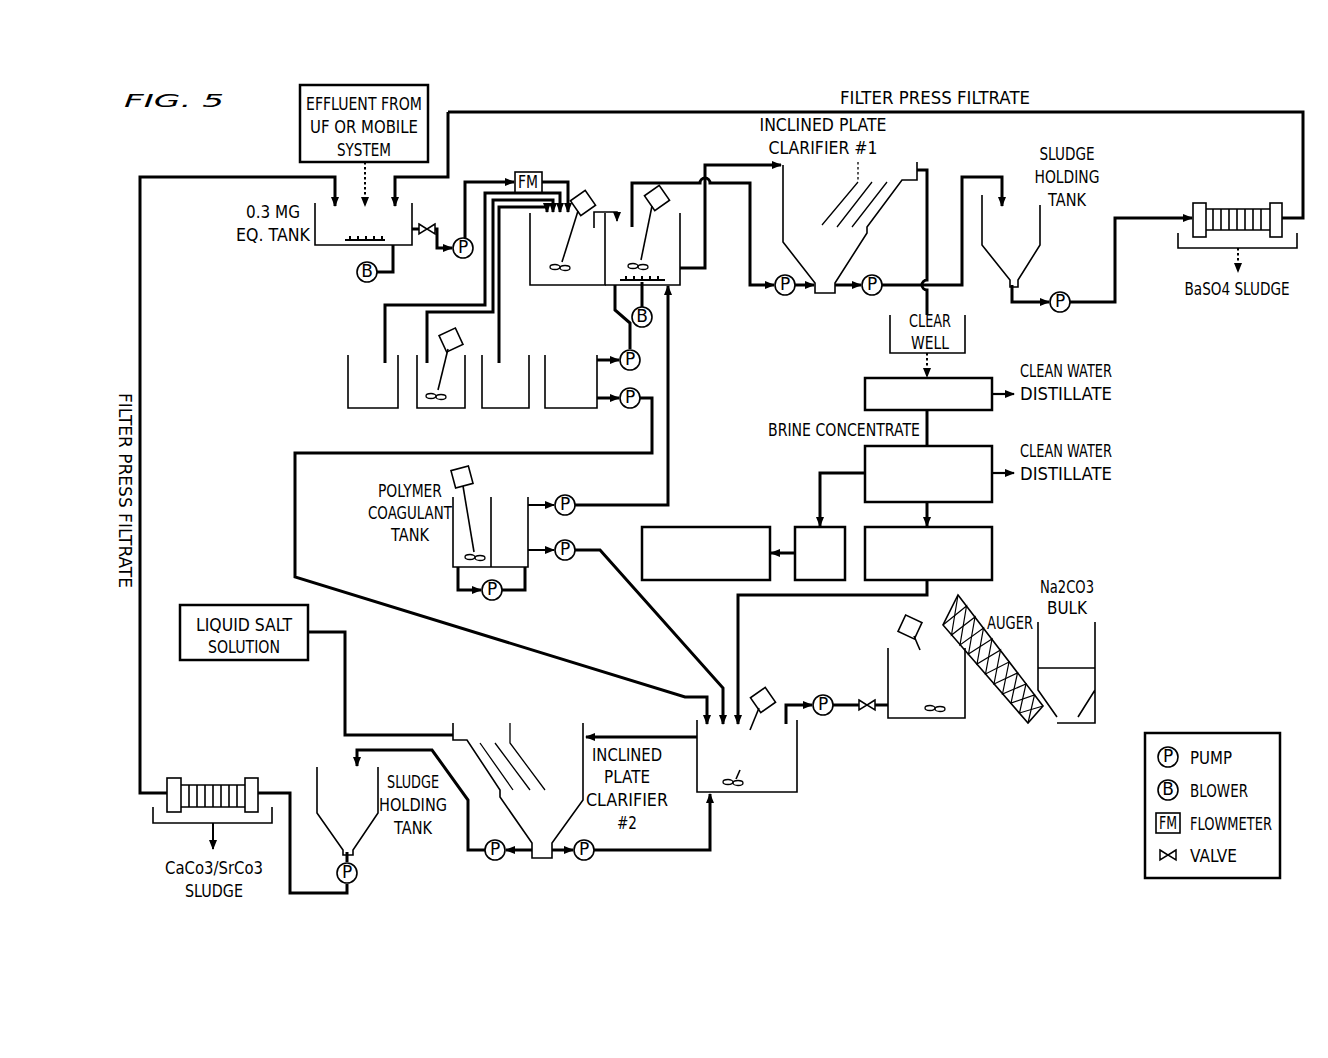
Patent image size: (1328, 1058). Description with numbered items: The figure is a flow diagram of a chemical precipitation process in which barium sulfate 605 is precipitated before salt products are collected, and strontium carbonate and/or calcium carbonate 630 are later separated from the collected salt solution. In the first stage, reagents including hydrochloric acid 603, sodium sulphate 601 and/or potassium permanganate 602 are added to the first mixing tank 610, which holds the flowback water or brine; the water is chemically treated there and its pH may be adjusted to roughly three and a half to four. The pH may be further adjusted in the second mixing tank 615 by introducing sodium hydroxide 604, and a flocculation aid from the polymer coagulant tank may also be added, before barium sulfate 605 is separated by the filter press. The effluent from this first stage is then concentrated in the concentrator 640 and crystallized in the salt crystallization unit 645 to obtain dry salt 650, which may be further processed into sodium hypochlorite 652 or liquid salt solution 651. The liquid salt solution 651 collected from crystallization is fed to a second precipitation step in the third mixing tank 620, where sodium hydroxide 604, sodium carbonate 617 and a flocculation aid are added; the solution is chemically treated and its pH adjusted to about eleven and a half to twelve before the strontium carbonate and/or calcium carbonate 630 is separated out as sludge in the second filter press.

The sodium sulphate 601 is at (375, 409).
The potassium permanganate 602 is at (441, 409).
The hydrochloric acid 603 is at (506, 409).
The sodium hydroxide 604 is at (571, 409).
The barium sulfate 605 is at (1236, 206).
The mixing tank #1 610 is at (585, 287).
The mixing tank #2 615 is at (683, 288).
The sodium carbonate 617 is at (925, 720).
The mixing tank #3 620 is at (768, 793).
The strontium carbonate and/or calcium carbonate 630 is at (213, 778).
The concentrator 640 is at (865, 398).
The crystallization 645 is at (865, 466).
The dry salt 650 is at (797, 526).
The liquid salt solution 651 is at (993, 558).
The sodium hypochlorite 652 is at (700, 526).